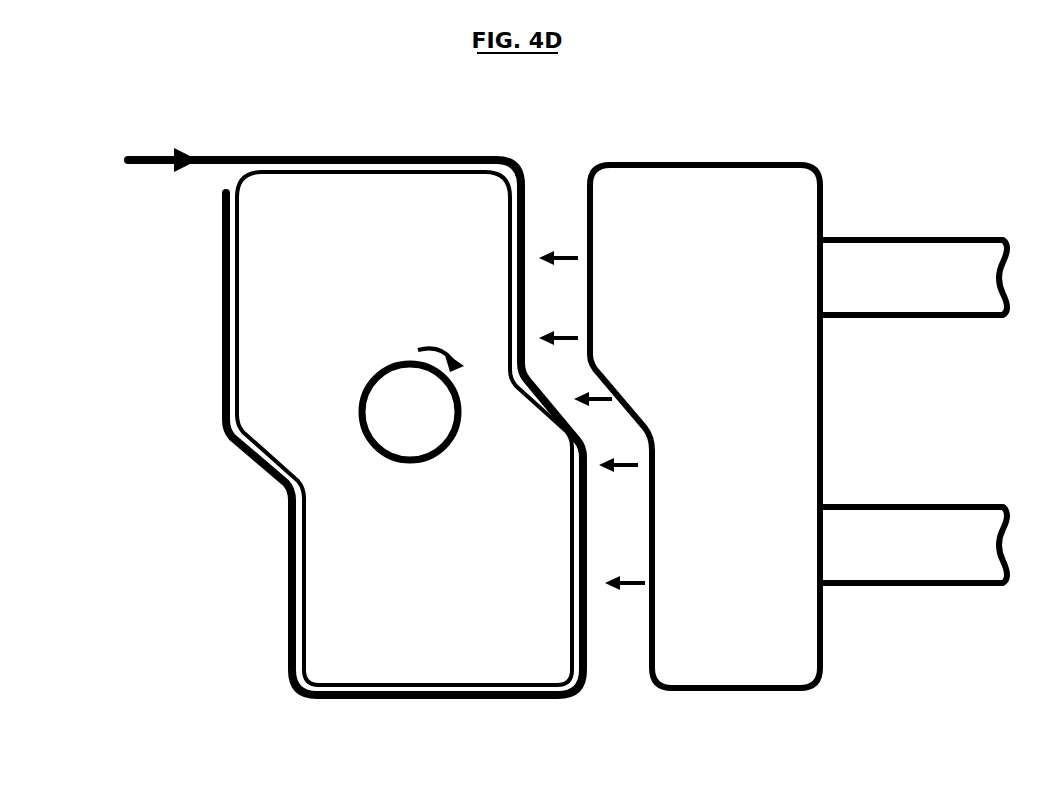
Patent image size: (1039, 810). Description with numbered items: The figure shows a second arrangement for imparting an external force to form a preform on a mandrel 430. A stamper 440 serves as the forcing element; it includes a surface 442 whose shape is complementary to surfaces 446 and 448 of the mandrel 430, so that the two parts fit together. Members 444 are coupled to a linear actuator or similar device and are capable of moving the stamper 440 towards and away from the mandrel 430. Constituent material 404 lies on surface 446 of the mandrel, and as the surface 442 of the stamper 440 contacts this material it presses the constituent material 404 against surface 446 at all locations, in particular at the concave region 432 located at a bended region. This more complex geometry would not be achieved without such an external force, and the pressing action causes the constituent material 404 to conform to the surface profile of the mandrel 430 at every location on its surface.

The constituent material 404 is at (232, 157).
The mandrel 430 is at (353, 322).
The concave region 432 is at (512, 397).
The stamper 440 is at (753, 415).
The surface 442 is at (587, 228).
The members 444 is at (937, 287).
The surface 446 is at (484, 307).
The surface 448 is at (341, 546).